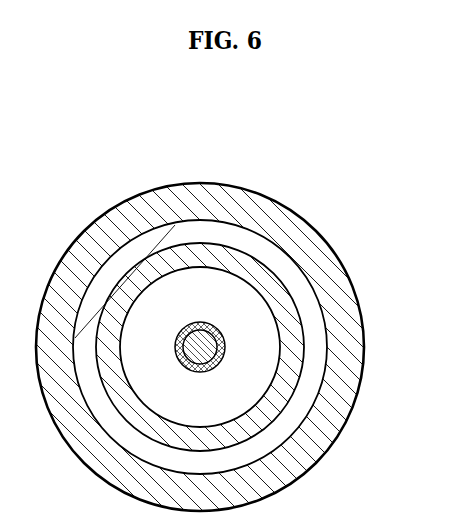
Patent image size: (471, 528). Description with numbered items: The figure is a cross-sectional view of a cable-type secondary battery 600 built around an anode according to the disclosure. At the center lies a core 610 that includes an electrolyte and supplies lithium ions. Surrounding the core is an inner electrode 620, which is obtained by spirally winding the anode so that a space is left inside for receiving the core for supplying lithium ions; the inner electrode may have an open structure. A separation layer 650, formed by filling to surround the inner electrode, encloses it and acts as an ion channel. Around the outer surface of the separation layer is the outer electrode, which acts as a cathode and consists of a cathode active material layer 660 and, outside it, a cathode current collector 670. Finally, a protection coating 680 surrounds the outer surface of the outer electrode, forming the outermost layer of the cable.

The cable-type secondary battery 600 is at (141, 161).
The core 610 is at (205, 343).
The inner electrode 620 is at (220, 350).
The separation layer 650 is at (210, 280).
The cathode active material layer 660 is at (239, 259).
The cathode current collector 670 is at (272, 252).
The protection coating 680 is at (310, 243).